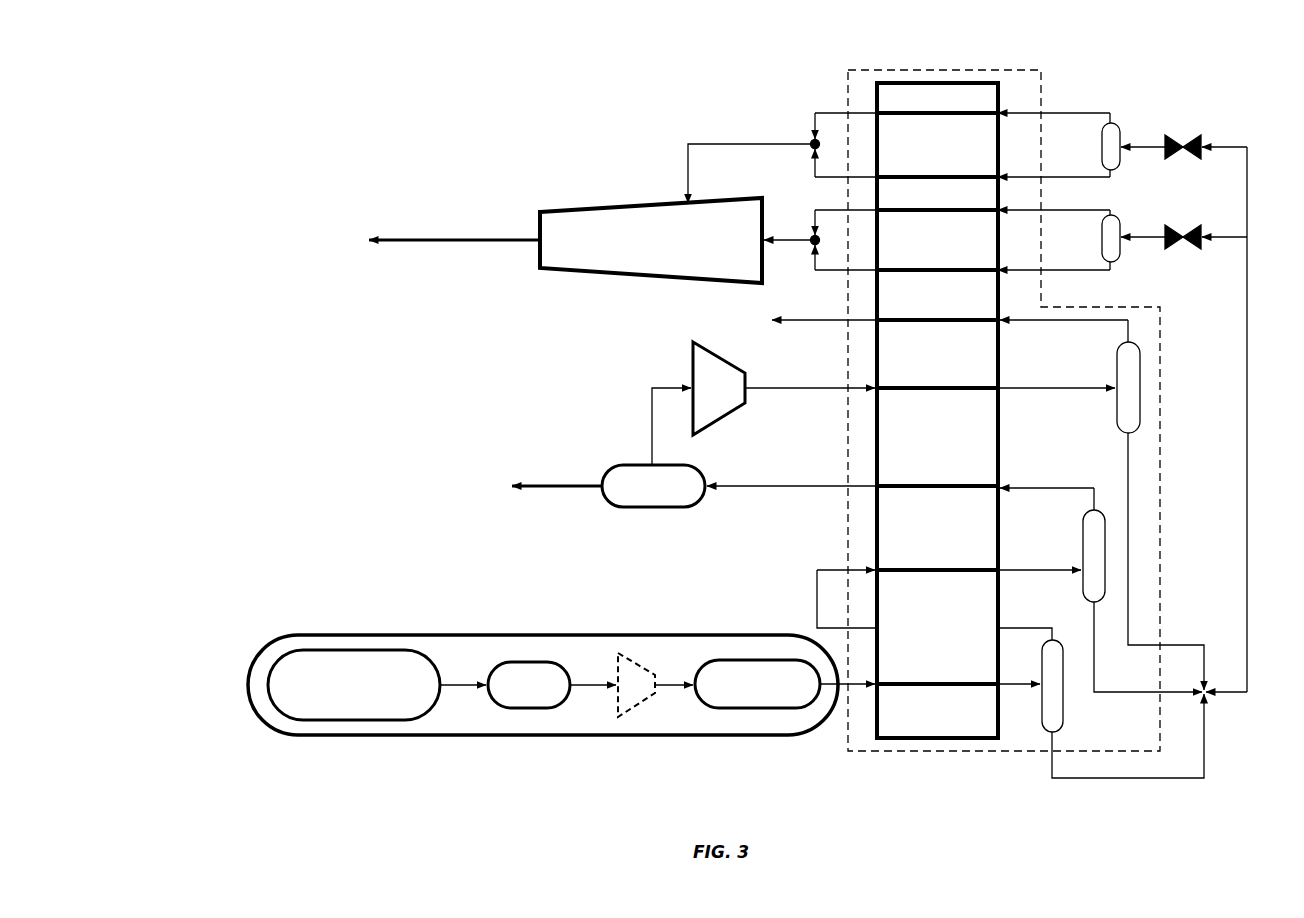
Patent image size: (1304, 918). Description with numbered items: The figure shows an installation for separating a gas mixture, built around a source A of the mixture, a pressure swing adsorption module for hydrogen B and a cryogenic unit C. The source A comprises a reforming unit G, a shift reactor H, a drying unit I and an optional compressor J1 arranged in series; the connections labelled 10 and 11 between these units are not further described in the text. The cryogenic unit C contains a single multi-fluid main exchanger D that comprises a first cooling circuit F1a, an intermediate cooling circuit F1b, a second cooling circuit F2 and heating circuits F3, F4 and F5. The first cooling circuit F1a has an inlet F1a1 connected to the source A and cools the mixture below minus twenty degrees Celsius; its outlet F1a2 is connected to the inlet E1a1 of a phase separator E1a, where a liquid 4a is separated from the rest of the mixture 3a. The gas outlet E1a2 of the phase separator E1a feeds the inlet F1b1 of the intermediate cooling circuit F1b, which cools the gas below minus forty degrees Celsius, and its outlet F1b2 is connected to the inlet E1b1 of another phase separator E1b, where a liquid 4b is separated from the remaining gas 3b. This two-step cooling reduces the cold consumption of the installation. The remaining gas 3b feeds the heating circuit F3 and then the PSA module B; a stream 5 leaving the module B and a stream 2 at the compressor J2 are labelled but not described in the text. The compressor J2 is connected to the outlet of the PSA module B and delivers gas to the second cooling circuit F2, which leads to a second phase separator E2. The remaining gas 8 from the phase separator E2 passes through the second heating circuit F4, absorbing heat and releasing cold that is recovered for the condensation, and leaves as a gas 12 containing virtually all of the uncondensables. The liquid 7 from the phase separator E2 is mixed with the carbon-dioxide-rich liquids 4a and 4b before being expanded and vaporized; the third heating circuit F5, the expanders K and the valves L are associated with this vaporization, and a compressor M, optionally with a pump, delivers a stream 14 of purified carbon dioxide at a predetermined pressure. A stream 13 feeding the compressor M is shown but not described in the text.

The source of mixture A is at (308, 738).
The reforming unit G is at (354, 685).
The shift reactor H is at (529, 685).
The compressor J1 is at (655, 685).
The drying unit I is at (757, 684).
The gas stream 10 is at (455, 688).
The gas stream 11 is at (590, 688).
The main exchanger D is at (935, 742).
The cryogenic unit C is at (1164, 533).
The pressure swing adsorption module for hydrogen B is at (653, 486).
The compressor M is at (677, 240).
The compressor J2 is at (784, 388).
The expanders K is at (1121, 131).
The valves L is at (1186, 141).
The feed stream 2 is at (650, 401).
The hydrogen product stream 5 is at (565, 481).
The liquid 7 is at (1131, 450).
The remaining gas 8 is at (1104, 327).
The gas containing uncondensables 12 is at (835, 318).
The turbine inlet stream 13 is at (761, 143).
The stream of purified CO2 14 is at (466, 246).
The rest of the mixture 3a is at (1020, 628).
The remaining gas 3b is at (1043, 488).
The liquid 4a is at (1126, 781).
The liquid 4b is at (1094, 656).
The phase separator E1a is at (1066, 668).
The inlet of phase separator E1a E1a1 is at (1038, 692).
The gas outlet of phase separator E1a E1a2 is at (1052, 640).
The phase separator E1b is at (1094, 580).
The inlet of phase separator E1b E1b1 is at (1094, 560).
The second phase separator E2 is at (1131, 387).
The first cooling circuit F1a is at (958, 681).
The inlet of first cooling circuit F1a1 is at (872, 690).
The outlet of first cooling circuit F1a2 is at (992, 688).
The intermediate cooling circuit F1b is at (962, 567).
The inlet of intermediate cooling circuit F1b1 is at (870, 567).
The outlet of intermediate cooling circuit F1b2 is at (1000, 565).
The second cooling circuit F2 is at (916, 384).
The heating circuit F3 is at (916, 482).
The second heating circuit F4 is at (958, 318).
The third heating circuit F5 is at (977, 120).